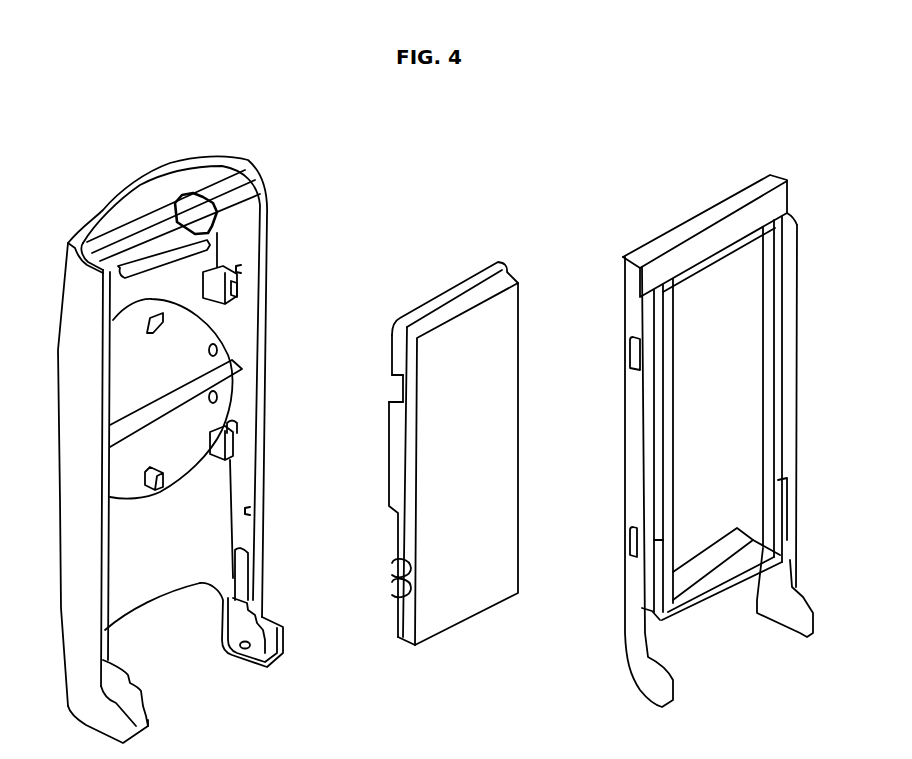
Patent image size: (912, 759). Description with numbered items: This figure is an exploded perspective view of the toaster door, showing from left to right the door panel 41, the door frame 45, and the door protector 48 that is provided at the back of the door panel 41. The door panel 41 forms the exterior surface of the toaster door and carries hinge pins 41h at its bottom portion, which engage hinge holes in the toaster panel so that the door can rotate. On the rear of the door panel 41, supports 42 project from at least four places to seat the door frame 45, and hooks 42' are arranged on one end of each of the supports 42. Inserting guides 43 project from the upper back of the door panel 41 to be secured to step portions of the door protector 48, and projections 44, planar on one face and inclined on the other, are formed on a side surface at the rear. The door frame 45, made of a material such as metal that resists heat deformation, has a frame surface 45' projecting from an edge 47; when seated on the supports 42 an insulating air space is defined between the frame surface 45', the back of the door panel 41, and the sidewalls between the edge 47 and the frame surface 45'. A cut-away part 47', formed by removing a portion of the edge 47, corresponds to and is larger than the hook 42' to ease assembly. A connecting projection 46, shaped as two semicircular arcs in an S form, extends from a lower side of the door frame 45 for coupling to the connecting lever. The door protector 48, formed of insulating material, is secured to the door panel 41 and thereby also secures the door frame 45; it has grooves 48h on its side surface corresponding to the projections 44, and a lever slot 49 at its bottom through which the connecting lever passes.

The door panel 41 is at (74, 543).
The hinge pins 41h is at (243, 657).
The supports 42 is at (250, 369).
The hooks 42' is at (272, 293).
The inserting guides 43 is at (112, 277).
The projections 44 is at (240, 269).
The door frame 45 is at (422, 490).
The frame surface 45' is at (466, 491).
The connecting projection 46 is at (392, 597).
The edge 47 is at (374, 486).
The cut-away part 47' is at (356, 388).
The door protector 48 is at (625, 258).
The grooves 48h is at (640, 353).
The lever slot 49 is at (658, 582).